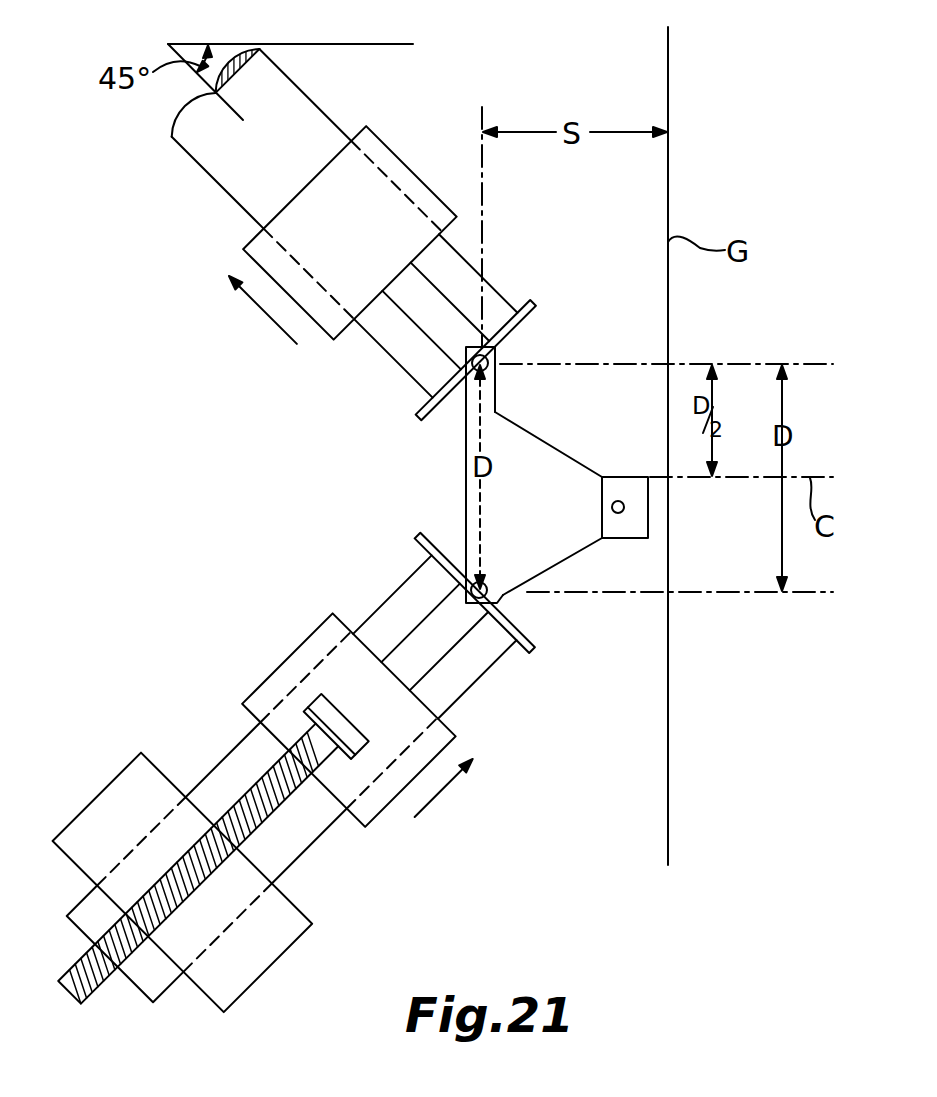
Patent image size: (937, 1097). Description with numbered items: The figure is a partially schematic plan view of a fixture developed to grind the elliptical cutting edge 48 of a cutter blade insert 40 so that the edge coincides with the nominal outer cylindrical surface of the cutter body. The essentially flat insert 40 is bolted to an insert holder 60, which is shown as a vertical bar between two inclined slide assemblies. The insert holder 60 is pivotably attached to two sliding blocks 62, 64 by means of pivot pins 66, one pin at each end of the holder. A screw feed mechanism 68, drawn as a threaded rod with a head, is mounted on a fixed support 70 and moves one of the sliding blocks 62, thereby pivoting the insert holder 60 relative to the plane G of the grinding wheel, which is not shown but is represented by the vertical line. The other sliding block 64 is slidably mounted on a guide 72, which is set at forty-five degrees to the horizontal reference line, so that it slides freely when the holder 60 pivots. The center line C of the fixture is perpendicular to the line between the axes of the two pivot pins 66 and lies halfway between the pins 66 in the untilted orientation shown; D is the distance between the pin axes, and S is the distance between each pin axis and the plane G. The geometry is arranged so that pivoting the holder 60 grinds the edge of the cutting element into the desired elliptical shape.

The cutter blade insert 40 is at (627, 533).
The elliptical cutting edge 48 is at (650, 536).
The insert holder 60 is at (466, 462).
The sliding block 62 is at (292, 647).
The sliding block 64 is at (300, 307).
The pivot pins 66 is at (476, 372).
The screw feed mechanism 68 is at (275, 826).
The fixed support 70 is at (217, 765).
The guide 72 is at (313, 100).